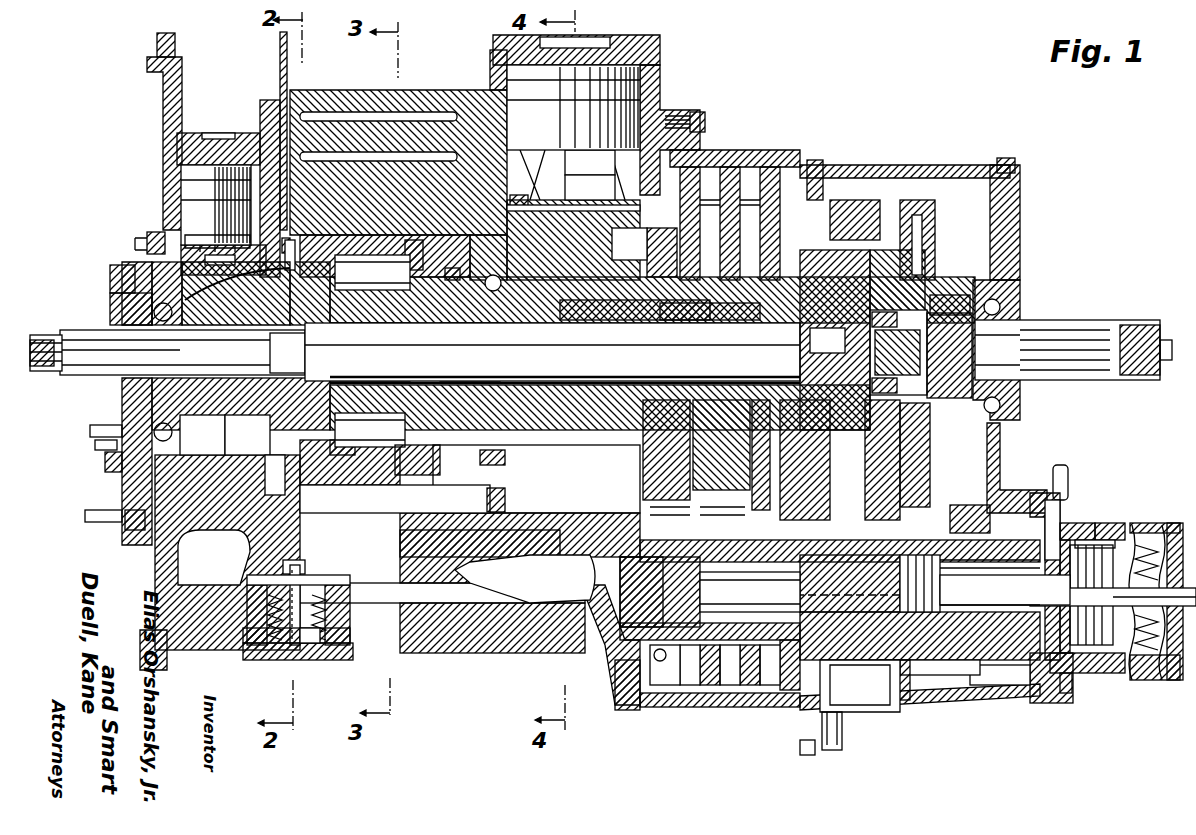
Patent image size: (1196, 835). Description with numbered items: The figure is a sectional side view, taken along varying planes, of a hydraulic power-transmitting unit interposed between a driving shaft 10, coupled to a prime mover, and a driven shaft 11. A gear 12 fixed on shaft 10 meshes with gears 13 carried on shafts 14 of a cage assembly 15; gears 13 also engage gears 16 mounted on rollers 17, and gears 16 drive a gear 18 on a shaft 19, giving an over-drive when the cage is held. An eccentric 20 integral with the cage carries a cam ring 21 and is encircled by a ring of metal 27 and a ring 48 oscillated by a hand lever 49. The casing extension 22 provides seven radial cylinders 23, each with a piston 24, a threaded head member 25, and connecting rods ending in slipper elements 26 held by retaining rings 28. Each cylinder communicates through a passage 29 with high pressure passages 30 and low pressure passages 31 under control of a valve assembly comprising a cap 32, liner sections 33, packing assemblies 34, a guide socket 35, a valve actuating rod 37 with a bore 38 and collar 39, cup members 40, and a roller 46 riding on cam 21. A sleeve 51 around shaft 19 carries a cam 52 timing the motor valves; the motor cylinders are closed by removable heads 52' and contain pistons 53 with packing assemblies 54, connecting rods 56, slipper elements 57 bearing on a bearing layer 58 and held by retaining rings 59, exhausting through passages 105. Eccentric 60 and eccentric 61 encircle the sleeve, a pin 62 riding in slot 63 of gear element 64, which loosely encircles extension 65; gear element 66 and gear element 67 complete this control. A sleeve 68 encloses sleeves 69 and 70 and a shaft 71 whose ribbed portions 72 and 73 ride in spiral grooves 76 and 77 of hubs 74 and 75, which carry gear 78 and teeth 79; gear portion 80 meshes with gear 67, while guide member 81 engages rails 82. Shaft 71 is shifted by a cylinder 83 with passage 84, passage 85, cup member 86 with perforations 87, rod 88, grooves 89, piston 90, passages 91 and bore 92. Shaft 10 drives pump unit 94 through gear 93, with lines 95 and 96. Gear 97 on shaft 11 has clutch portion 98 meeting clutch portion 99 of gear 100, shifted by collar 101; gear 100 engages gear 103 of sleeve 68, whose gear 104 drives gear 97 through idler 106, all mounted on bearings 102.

The driving shaft 10 is at (100, 332).
The driven shaft 11 is at (1035, 330).
The gear 12 is at (290, 360).
The gears 13 is at (255, 300).
The shafts 14 is at (412, 265).
The cage assembly 15 is at (423, 245).
The gears 16 is at (408, 470).
The rollers 17 is at (370, 430).
The gear 18 is at (405, 335).
The shaft 19 is at (470, 352).
The eccentric 20 is at (118, 300).
The cam ring 21 is at (275, 470).
The casing extension 22 is at (181, 187).
The cylinders 23 is at (177, 152).
The piston 24 is at (195, 210).
The head member 25 is at (262, 130).
The slipper elements 26 is at (200, 240).
The ring of metal 27 is at (112, 283).
The retaining rings 28 is at (147, 243).
The passage 29 is at (214, 557).
The high pressure passages 30 is at (425, 603).
The low pressure passages 31 is at (470, 525).
The cap 32 is at (258, 658).
The liner sections 33 is at (262, 622).
The packing assemblies 34 is at (255, 610).
The guide socket 35 is at (250, 645).
The valve actuating rod 37 is at (290, 585).
The bore 38 is at (310, 645).
The collar 39 is at (275, 597).
The cup members 40 is at (283, 572).
The roller 46 is at (202, 435).
The ring 48 is at (286, 255).
The hand lever 49 is at (280, 52).
The sleeve 51 is at (620, 322).
The cam 52 is at (473, 265).
The removable heads 52' is at (599, 36).
The piston 53 is at (625, 110).
The packing assemblies 54 is at (610, 90).
The connecting rod 56 is at (590, 162).
The slipper element 57 is at (590, 184).
The bearing layer 58 is at (532, 208).
The retaining rings 59 is at (518, 195).
The eccentric 60 is at (535, 322).
The eccentric 61 is at (590, 262).
The pin 62 is at (695, 175).
The slot 63 is at (644, 260).
The gear element 64 is at (735, 175).
The extension 65 is at (688, 322).
The gear element 66 is at (775, 175).
The gear element 67 is at (815, 165).
The sleeve 68 is at (905, 540).
The sleeve 69 is at (665, 688).
The sleeve 70 is at (730, 688).
The shaft 71 is at (855, 705).
The portion 72 is at (610, 665).
The portion 73 is at (790, 692).
The hub 74 is at (640, 558).
The hub 75 is at (772, 688).
The spiral grooves 76 is at (722, 576).
The spiral grooves 77 is at (875, 577).
The gear 78 is at (695, 688).
The teeth 79 is at (712, 688).
The gear portion 80 is at (750, 688).
The guide member 81 is at (920, 668).
The guiding rails 82 is at (1072, 530).
The cylinder 83 is at (1145, 526).
The passage 84 is at (1118, 528).
The passage 85 is at (1060, 520).
The cup member 86 is at (1135, 670).
The perforations 87 is at (1112, 575).
The rod 88 is at (1149, 597).
The grooves 89 is at (1072, 690).
The piston 90 is at (1095, 542).
The passages 91 is at (1090, 673).
The bore 92 is at (1000, 690).
The gear 93 is at (125, 428).
The pump unit 94 is at (135, 522).
The line 95 is at (110, 444).
The line 96 is at (95, 515).
The gear 97 is at (915, 250).
The clutch portion 98 is at (883, 233).
The clutch portion 99 is at (835, 340).
The gear 100 is at (852, 200).
The shifting collar 101 is at (1005, 232).
The bearings 102 is at (932, 305).
The gear 103 is at (832, 750).
The gear 104 is at (955, 675).
The passages 105 is at (497, 566).
The idler 106 is at (965, 515).